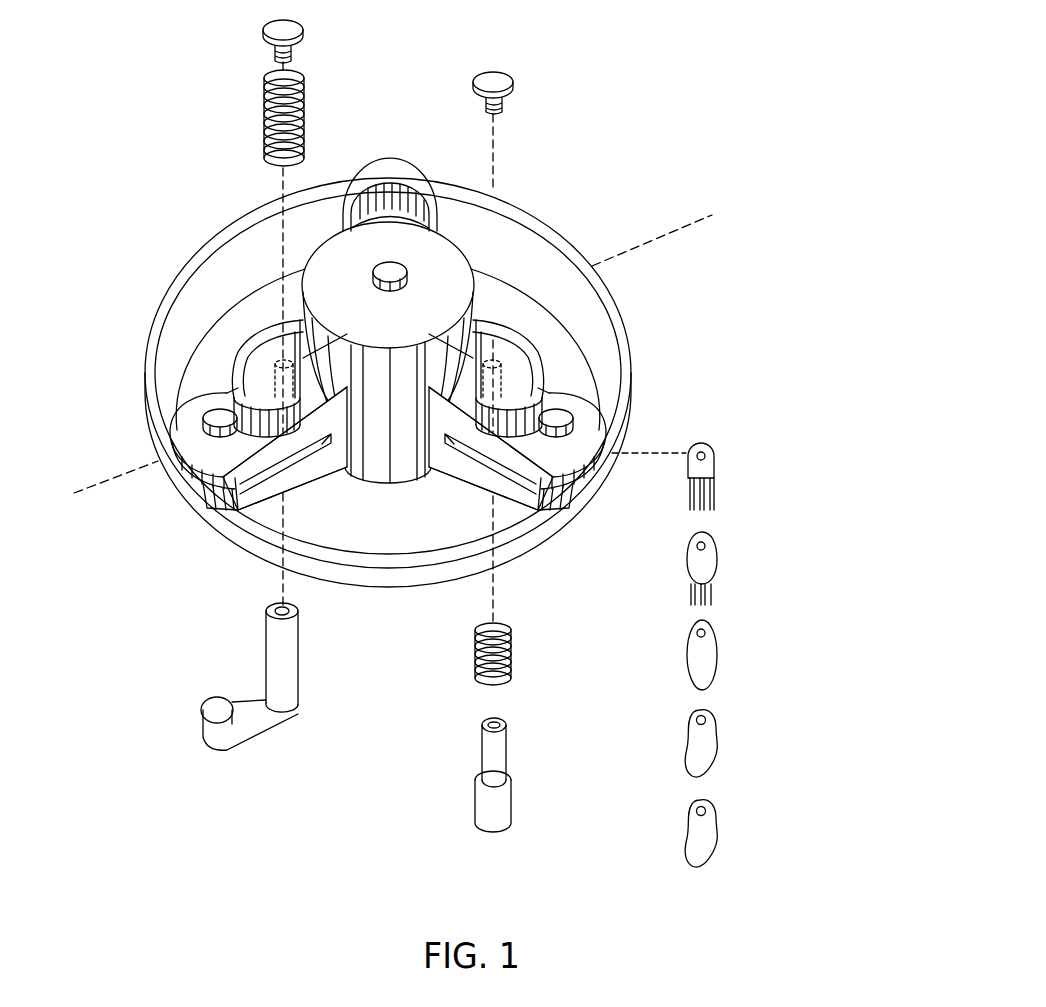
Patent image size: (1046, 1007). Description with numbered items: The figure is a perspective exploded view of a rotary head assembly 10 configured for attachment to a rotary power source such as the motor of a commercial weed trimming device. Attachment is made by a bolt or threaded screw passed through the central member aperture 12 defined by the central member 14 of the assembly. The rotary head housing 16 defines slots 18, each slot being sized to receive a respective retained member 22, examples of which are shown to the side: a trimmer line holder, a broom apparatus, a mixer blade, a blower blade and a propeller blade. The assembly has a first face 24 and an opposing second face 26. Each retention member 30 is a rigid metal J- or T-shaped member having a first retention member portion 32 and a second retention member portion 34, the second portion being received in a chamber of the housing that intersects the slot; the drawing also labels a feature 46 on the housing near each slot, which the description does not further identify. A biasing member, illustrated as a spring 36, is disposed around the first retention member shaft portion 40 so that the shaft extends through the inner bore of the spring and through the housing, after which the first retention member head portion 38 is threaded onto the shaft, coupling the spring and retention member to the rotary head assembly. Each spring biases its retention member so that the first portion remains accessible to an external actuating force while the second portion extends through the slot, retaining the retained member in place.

The rotary head assembly 10 is at (598, 196).
The central member aperture 12 is at (398, 272).
The central member 14 is at (463, 268).
The rotary head housing 16 is at (628, 340).
The slot 18 is at (212, 486).
The retained member 22 is at (716, 449).
The first face 24 is at (564, 312).
The second face 26 is at (388, 604).
The retention member 30 is at (307, 690).
The first retention member portion 32 is at (306, 644).
The second retention member portion 34 is at (205, 743).
The biasing member 36 is at (304, 116).
The first retention member head portion 38 is at (303, 30).
The first retention member shaft portion 40 is at (276, 374).
The spring housing 46 is at (258, 344).